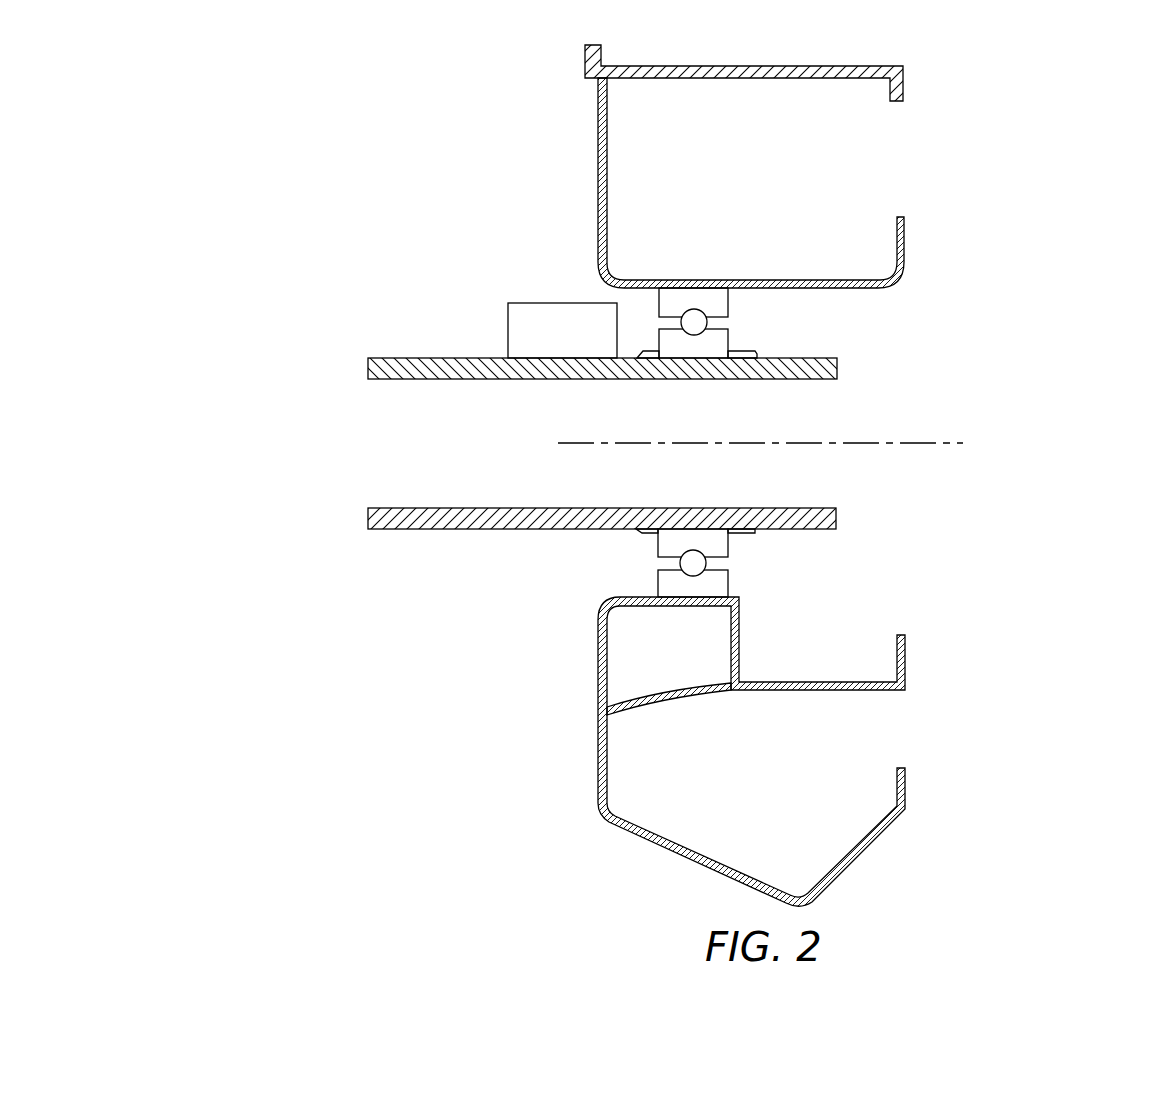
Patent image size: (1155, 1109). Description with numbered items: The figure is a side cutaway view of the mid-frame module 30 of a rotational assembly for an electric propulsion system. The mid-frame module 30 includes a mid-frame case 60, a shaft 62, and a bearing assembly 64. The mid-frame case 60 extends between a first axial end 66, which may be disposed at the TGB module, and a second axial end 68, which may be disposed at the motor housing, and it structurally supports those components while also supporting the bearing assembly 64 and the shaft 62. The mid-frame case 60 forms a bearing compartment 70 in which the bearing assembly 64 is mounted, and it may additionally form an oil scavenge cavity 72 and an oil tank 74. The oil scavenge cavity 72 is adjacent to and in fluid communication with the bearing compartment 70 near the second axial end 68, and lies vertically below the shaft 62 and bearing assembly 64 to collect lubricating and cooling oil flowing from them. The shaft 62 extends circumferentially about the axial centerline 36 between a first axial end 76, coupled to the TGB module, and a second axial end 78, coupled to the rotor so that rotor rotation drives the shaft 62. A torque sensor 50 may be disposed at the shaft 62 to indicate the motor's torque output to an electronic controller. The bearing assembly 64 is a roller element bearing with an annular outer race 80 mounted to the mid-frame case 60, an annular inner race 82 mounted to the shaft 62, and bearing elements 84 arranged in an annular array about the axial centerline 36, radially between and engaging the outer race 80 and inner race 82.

The mid-frame module 30 is at (1068, 152).
The axial centerline 36 is at (937, 443).
The torque sensor 50 is at (548, 303).
The mid-frame case 60 is at (905, 80).
The shaft 62 is at (800, 514).
The bearing assembly 64 is at (758, 320).
The first axial end 66 is at (552, 96).
The second axial end 68 is at (962, 677).
The bearing compartment 70 is at (750, 292).
The oil scavenge cavity 72 is at (850, 638).
The oil tank 74 is at (790, 821).
The first axial end 76 is at (345, 528).
The second axial end 78 is at (850, 372).
The annular outer race 80 is at (683, 300).
The annular inner race 82 is at (677, 345).
The bearing elements 84 is at (697, 332).